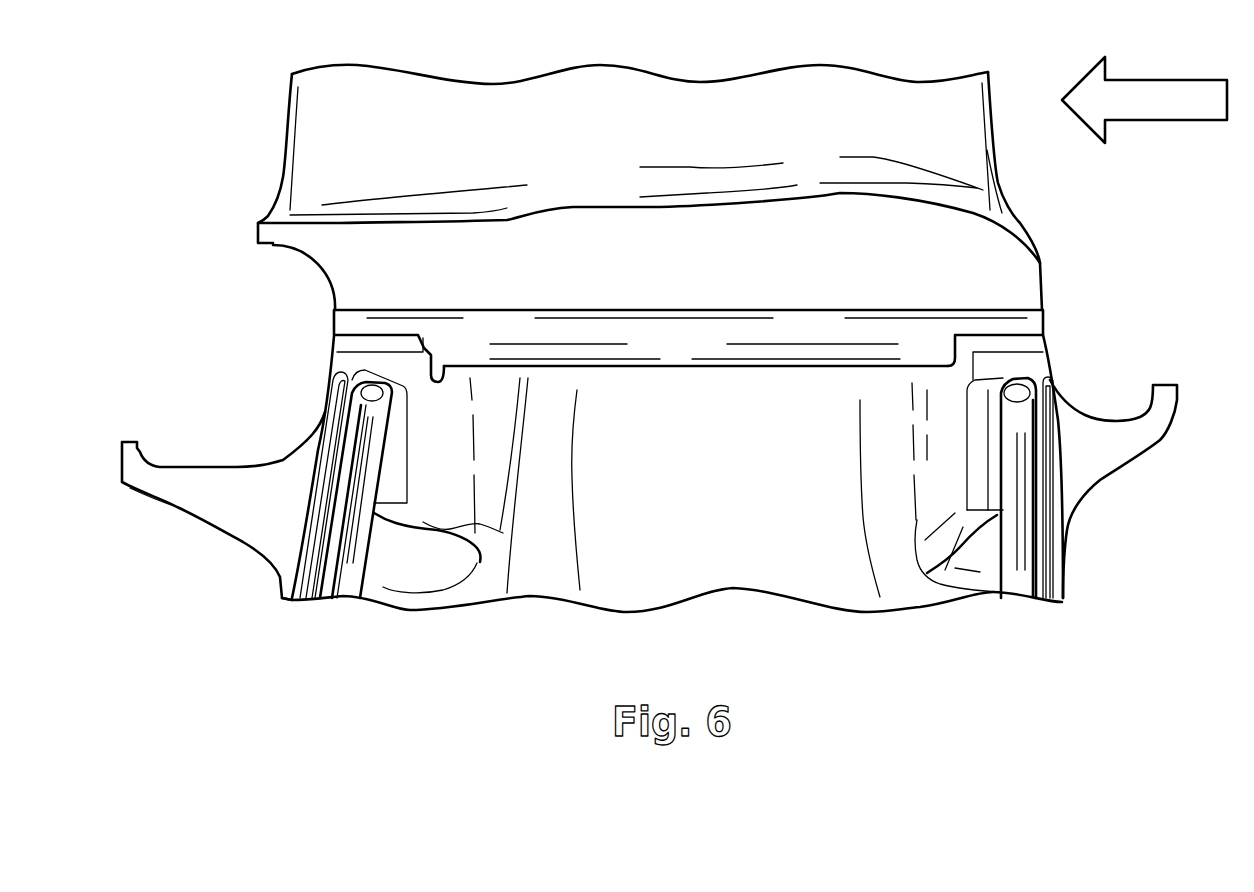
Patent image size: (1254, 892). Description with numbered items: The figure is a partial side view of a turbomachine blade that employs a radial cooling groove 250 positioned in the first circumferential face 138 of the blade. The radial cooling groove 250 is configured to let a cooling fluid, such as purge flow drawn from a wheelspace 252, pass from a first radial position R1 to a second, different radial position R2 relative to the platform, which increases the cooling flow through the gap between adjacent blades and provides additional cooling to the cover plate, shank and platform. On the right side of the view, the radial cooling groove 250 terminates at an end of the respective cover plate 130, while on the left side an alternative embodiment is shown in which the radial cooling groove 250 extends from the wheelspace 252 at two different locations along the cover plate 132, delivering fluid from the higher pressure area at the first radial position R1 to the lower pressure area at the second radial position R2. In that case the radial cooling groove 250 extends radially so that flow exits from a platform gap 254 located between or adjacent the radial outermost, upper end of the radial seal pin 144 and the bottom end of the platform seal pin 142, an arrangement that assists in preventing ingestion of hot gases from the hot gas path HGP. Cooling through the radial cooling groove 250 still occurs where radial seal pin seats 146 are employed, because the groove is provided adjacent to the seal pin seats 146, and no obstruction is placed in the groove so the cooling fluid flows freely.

The platform seal pin 142 is at (690, 333).
The platform gap 254 is at (357, 362).
The radial cooling groove 250 is at (340, 417).
The radial seal pin 144 is at (367, 411).
The radial seal pin seat 146 is at (387, 485).
The cover plate 130 is at (1060, 450).
The cover plate 132 is at (268, 525).
The first circumferential face 138 is at (303, 582).
The wheelspace 252 is at (170, 563).
The first radial position R1 is at (252, 630).
The second radial position R2 is at (197, 338).
The hot gas path HGP is at (1178, 100).